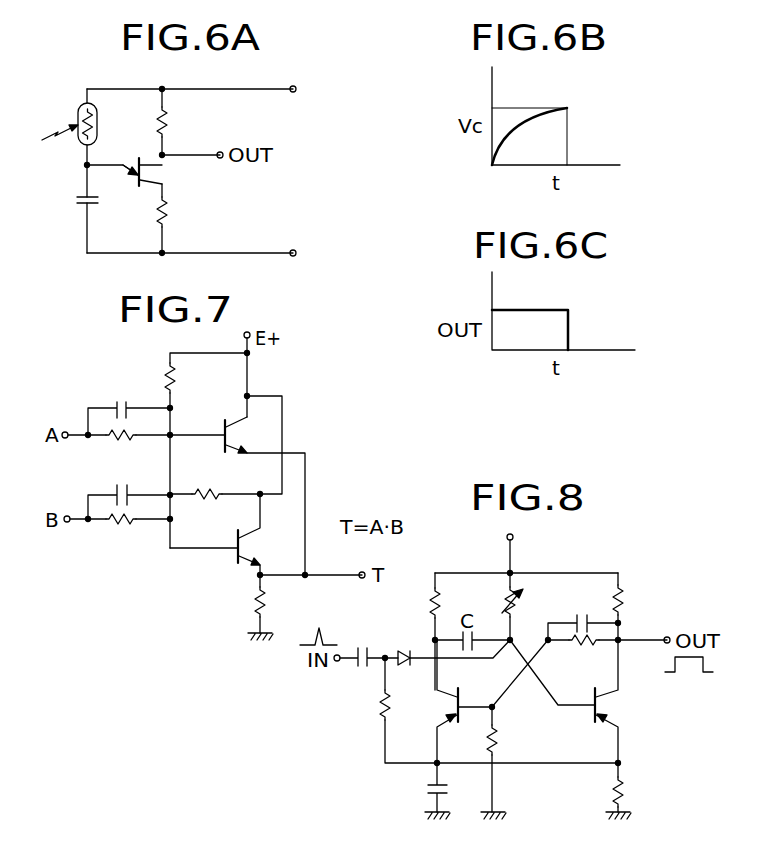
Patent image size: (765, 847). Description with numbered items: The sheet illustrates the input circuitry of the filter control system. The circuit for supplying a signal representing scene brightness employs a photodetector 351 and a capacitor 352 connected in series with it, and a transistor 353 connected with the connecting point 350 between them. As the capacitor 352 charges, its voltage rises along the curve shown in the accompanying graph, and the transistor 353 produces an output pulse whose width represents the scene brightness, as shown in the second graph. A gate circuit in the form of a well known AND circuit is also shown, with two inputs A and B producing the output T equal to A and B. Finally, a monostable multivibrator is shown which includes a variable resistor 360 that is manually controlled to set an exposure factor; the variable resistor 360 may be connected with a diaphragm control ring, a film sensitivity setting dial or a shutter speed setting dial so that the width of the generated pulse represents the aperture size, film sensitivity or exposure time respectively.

In FIG. 6A, the connecting point 350 is at (84, 165).
In FIG. 6A, the photodetector 351 is at (78, 108).
In FIG. 6A, the capacitor 352 is at (77, 199).
In FIG. 6A, the transistor 353 is at (154, 184).
In FIG. 8, the variable resistor 360 is at (523, 589).